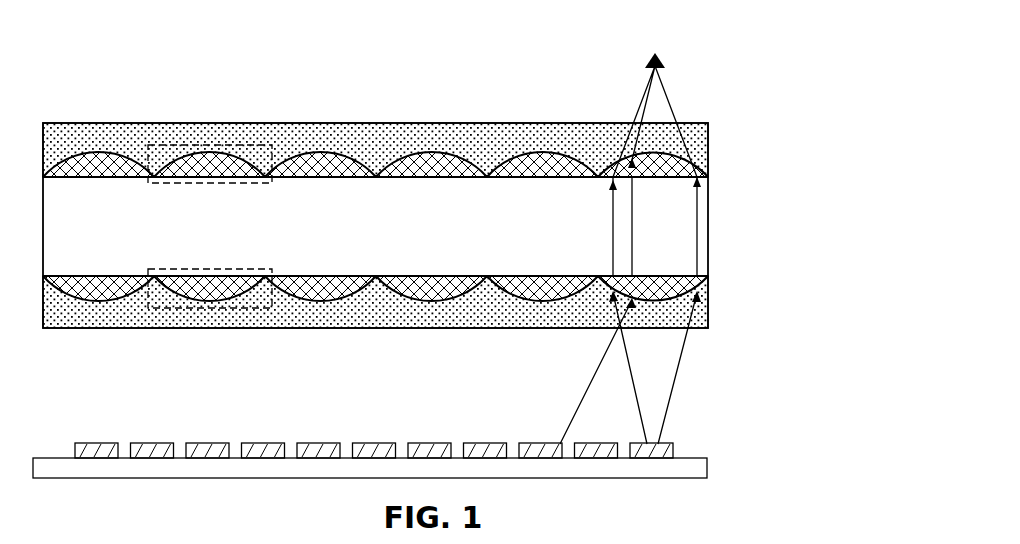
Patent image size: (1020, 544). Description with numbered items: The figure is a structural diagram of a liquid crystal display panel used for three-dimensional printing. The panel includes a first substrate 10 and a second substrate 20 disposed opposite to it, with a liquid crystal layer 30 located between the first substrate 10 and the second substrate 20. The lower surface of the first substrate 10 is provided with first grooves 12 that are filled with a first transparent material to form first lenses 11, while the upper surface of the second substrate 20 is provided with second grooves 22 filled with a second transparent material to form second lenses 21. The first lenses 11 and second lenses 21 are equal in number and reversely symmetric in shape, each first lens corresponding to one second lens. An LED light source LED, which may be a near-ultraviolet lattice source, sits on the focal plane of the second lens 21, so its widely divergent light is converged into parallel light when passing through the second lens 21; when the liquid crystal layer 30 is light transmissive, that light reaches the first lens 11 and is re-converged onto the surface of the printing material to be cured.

The first substrate 10 is at (708, 127).
The first lens 11 is at (87, 158).
The first groove 12 is at (198, 145).
The second substrate 20 is at (708, 313).
The second lens 21 is at (100, 300).
The second groove 22 is at (210, 308).
The liquid crystal layer 30 is at (708, 228).
The LED light source LED is at (675, 438).